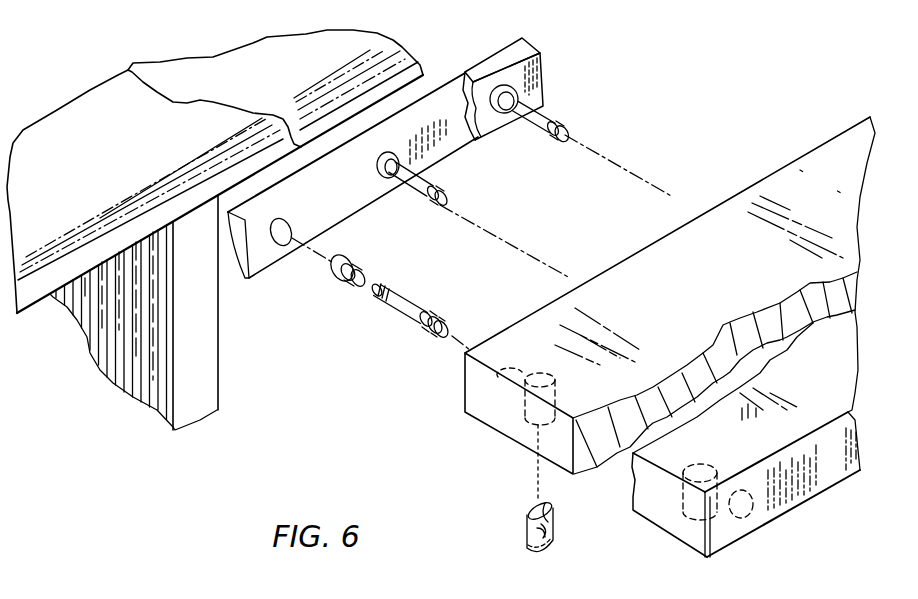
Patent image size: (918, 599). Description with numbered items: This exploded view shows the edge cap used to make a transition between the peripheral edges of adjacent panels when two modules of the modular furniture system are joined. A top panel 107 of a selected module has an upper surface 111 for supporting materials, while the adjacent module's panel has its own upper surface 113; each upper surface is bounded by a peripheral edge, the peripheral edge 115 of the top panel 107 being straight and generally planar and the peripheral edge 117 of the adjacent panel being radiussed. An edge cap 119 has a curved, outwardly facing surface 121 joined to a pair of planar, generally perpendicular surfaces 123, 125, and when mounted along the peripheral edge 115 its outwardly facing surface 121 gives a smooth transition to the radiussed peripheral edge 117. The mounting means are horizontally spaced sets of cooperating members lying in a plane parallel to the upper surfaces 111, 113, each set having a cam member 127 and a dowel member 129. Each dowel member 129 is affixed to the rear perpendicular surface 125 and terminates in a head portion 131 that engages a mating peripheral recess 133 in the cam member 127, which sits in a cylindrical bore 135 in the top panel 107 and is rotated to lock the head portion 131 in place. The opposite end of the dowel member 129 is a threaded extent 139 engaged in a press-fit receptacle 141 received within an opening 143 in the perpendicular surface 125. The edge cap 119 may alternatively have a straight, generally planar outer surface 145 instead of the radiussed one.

The top panel 107 is at (708, 208).
The upper surface 111 is at (815, 150).
The upper surface 113 is at (165, 67).
The peripheral edge 115 is at (763, 180).
The peripheral edge 117 is at (404, 73).
The edge cap 119 is at (376, 46).
The outwardly facing surface 121 is at (241, 248).
The planar surface 123 is at (330, 163).
The rear perpendicular surface 125 is at (448, 146).
The cam member 127 is at (535, 492).
The dowel member 129 is at (407, 322).
The head portion 131 is at (453, 324).
The peripheral recess 133 is at (553, 530).
The cylindrical bore 135 is at (523, 441).
The threaded opposite extent 139 is at (375, 294).
The press-fit receptacle 141 is at (345, 290).
The opening 143 is at (290, 236).
The planar outer surface 145 is at (820, 482).